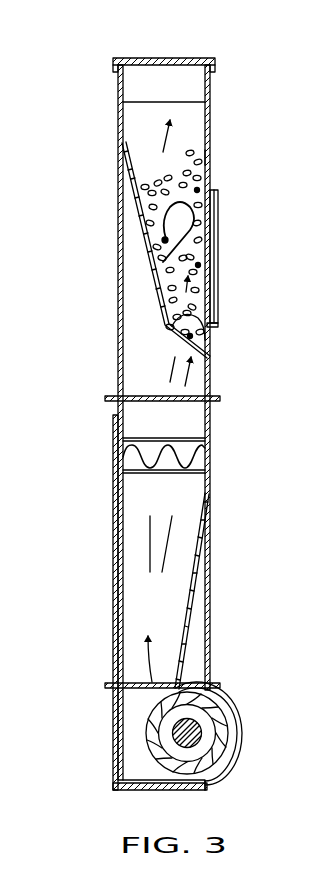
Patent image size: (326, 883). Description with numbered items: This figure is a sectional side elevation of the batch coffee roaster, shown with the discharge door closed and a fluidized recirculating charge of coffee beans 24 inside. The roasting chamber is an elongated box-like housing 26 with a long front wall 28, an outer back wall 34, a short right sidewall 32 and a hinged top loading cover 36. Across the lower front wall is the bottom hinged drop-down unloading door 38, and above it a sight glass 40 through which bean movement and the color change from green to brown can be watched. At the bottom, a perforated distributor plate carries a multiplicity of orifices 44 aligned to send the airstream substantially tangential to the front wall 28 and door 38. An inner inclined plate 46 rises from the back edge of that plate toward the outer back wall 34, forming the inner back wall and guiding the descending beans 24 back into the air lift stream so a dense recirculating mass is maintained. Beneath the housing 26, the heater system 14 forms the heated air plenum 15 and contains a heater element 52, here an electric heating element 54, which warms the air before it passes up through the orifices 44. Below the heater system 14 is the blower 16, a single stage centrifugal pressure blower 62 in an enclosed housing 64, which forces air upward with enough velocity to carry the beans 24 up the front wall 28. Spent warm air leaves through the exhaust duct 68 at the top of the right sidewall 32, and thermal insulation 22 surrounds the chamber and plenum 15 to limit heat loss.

The heater system 14 is at (211, 432).
The heated air plenum 15 is at (160, 378).
The blower 16 is at (229, 700).
The thermal insulation 22 is at (112, 490).
The coffee beans 24 is at (179, 232).
The housing 26 is at (92, 346).
The front wall 28 is at (212, 122).
The sidewall 32 is at (158, 133).
The outer back wall 34 is at (118, 282).
The hinged top loading cover 36 is at (184, 58).
The unloading door 38 is at (219, 228).
The sight glass 40 is at (211, 157).
The orifices 44 is at (200, 338).
The inner inclined plate 46 is at (140, 236).
The heater element 52 is at (182, 444).
The electric heating element 54 is at (206, 462).
The centrifugal pressure blower 62 is at (178, 716).
The enclosed housing 64 is at (216, 778).
The exhaust duct 68 is at (192, 88).